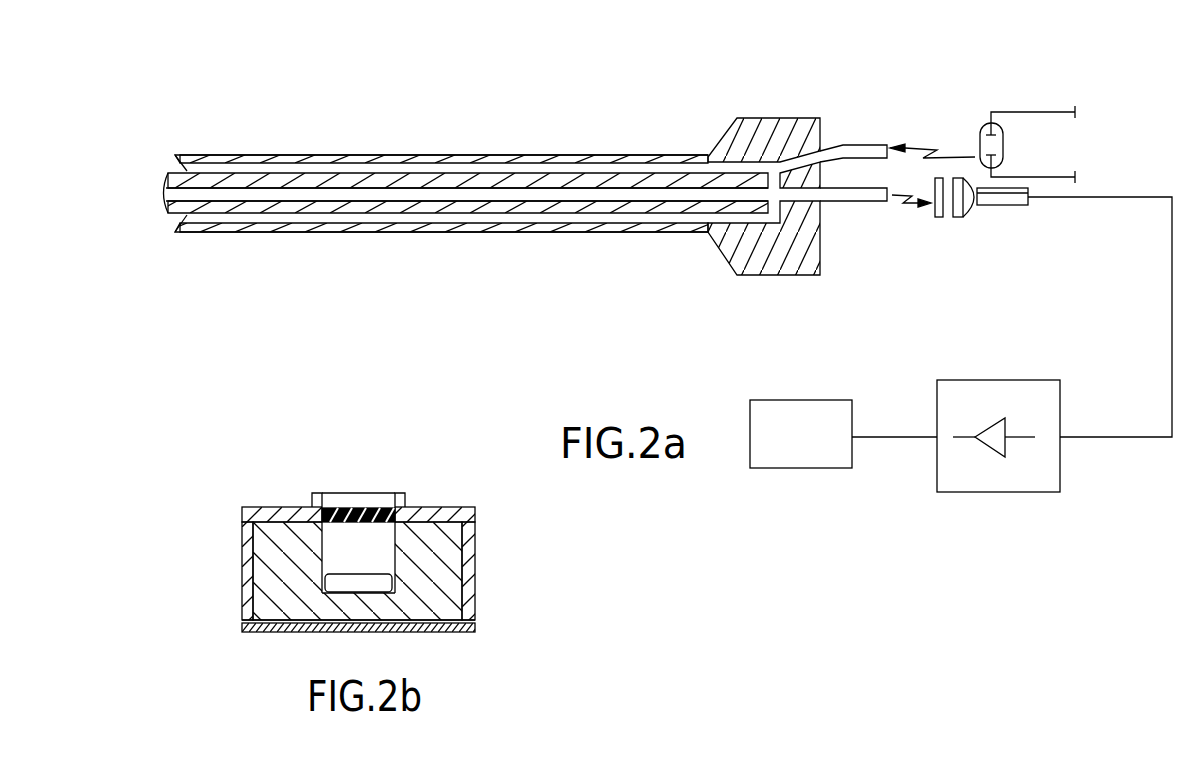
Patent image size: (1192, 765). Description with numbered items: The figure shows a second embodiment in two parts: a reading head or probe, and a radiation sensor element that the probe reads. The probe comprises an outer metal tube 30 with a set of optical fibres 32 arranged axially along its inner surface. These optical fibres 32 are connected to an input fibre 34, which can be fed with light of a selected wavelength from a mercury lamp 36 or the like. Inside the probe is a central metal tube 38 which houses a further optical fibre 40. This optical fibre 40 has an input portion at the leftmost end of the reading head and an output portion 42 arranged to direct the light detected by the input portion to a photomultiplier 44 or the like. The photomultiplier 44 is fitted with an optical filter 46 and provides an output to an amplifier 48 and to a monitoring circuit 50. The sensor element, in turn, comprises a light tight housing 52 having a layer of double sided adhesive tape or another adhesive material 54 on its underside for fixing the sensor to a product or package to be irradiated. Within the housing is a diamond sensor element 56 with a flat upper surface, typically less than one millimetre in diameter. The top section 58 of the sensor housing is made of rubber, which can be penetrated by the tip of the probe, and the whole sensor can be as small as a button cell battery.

In FIG. 2A, the outer metal tube 30 is at (497, 155).
In FIG. 2A, the optical fibres 32 is at (212, 166).
In FIG. 2A, the input fibre 34 is at (868, 144).
In FIG. 2A, the mercury lamp 36 is at (987, 128).
In FIG. 2A, the central metal tube 38 is at (174, 212).
In FIG. 2A, the optical fibre 40 is at (166, 193).
In FIG. 2A, the output portion 42 is at (866, 203).
In FIG. 2A, the photomultiplier 44 is at (1018, 207).
In FIG. 2A, the optical filter 46 is at (937, 219).
In FIG. 2A, the amplifier 48 is at (1045, 380).
In FIG. 2A, the monitoring circuit 50 is at (825, 400).
In FIG. 2B, the light tight housing 52 is at (240, 590).
In FIG. 2B, the adhesive material 54 is at (262, 632).
In FIG. 2B, the diamond sensor element 56 is at (370, 573).
In FIG. 2B, the top section 58 is at (368, 520).